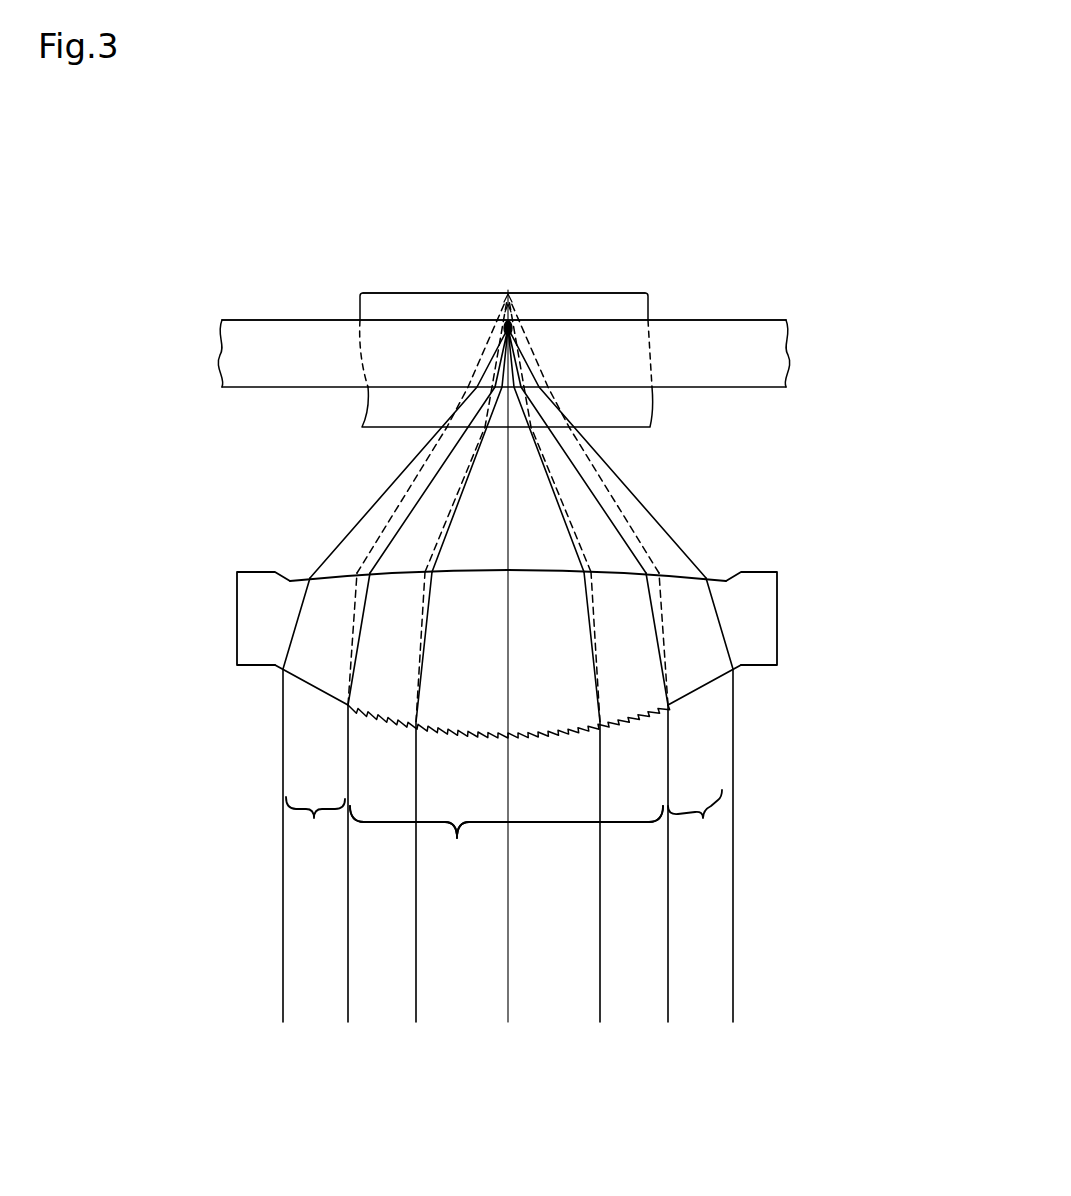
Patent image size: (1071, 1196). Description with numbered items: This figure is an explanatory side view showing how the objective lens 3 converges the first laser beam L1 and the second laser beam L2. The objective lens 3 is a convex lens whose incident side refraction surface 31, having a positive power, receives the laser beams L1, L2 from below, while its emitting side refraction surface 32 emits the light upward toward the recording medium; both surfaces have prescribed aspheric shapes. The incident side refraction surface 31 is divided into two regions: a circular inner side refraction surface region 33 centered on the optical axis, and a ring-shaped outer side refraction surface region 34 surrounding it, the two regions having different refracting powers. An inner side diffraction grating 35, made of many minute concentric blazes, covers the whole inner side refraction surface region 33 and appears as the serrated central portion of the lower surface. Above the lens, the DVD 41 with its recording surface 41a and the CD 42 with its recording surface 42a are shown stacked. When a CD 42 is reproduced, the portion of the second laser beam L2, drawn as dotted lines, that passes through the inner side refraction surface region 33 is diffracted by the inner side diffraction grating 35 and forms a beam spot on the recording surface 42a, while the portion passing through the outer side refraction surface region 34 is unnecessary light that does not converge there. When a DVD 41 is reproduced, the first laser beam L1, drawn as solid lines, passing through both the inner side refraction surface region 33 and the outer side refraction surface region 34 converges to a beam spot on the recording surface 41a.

The objective lens 3 is at (567, 710).
The incident side refraction surface 31 is at (698, 727).
The emitting side refraction surface 32 is at (673, 563).
The inner side refraction surface region 33 is at (506, 841).
The outer side refraction surface region 34 is at (504, 824).
The inner side diffraction grating 35 is at (506, 861).
The DVD 41 is at (543, 301).
The recording surface of the DVD 41a is at (293, 320).
The CD 42 is at (651, 288).
The recording surface of the CD 42a is at (405, 293).
The first laser beam L1 is at (667, 530).
The second laser beam L2 is at (613, 502).